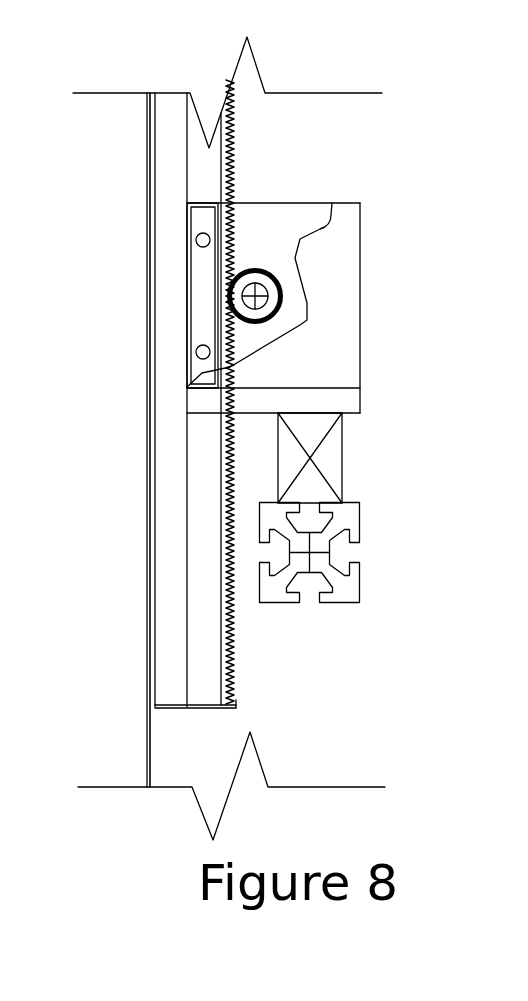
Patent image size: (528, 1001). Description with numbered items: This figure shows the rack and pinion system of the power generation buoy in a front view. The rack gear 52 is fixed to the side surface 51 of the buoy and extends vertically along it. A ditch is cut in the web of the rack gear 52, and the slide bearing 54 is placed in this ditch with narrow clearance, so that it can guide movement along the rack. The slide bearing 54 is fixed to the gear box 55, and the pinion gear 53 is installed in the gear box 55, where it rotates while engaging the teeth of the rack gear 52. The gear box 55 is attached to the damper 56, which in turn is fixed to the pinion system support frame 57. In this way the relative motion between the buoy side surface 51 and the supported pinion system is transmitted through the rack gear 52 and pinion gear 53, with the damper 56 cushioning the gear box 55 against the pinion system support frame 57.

The side surface 51 is at (108, 440).
The rack gear 52 is at (280, 392).
The pinion gear 53 is at (298, 237).
The slide bearing 54 is at (119, 281).
The gear box 55 is at (322, 294).
The damper 56 is at (374, 436).
The pinion system support frame 57 is at (377, 518).